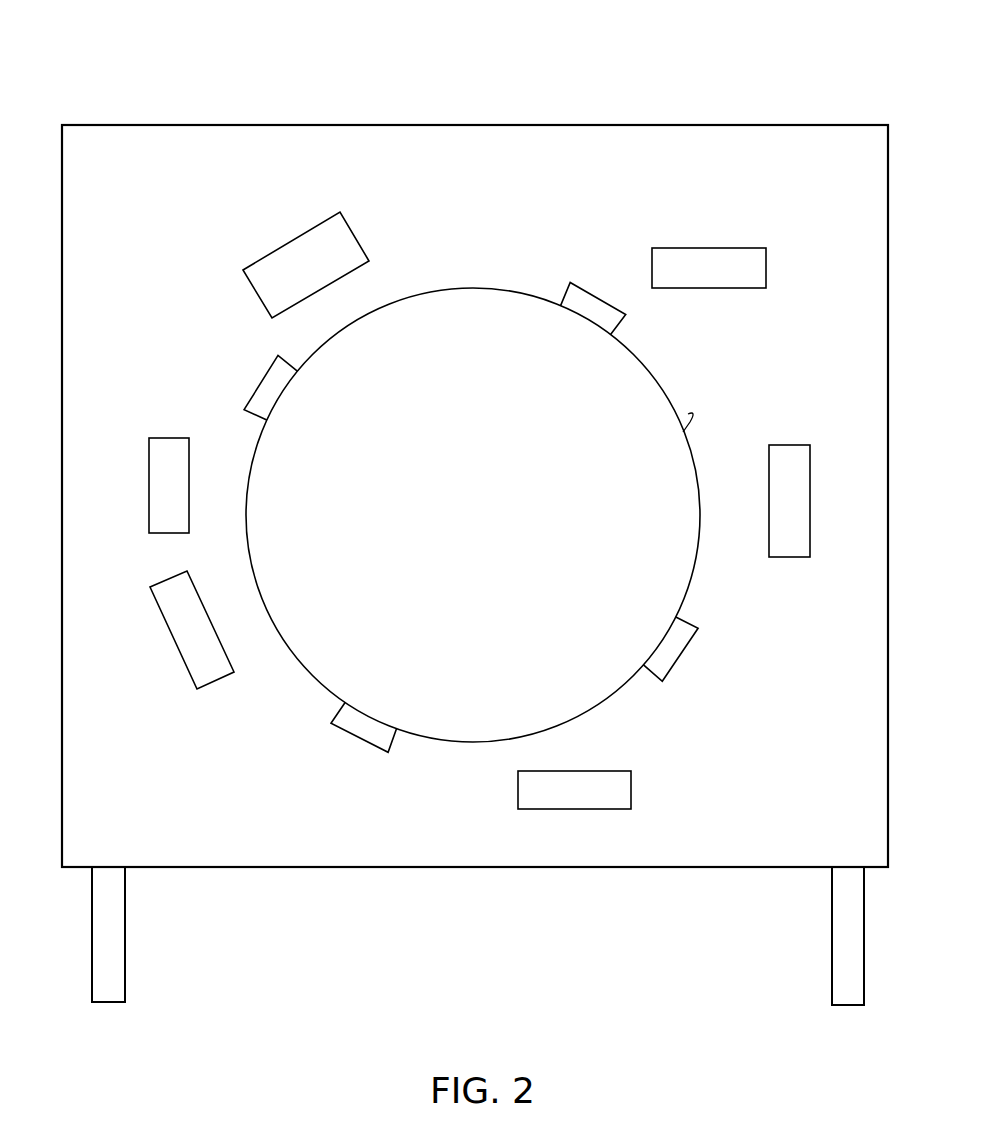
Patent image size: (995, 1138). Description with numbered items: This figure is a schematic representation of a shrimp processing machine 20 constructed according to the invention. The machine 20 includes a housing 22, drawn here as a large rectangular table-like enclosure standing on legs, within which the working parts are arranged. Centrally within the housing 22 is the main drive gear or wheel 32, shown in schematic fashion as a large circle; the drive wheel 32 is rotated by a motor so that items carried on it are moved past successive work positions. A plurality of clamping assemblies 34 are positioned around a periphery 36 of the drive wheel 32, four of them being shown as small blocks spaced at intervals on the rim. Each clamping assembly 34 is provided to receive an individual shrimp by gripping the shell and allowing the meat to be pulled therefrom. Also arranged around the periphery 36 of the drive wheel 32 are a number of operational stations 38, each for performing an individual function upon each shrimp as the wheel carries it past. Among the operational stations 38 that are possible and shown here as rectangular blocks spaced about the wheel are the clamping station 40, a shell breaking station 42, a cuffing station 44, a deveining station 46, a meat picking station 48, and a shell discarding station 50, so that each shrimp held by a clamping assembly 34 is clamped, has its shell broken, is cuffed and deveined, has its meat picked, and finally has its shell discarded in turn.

The machine 20 is at (428, 69).
The housing 22 is at (130, 125).
The main drive gear or wheel 32 is at (317, 621).
The clamping assemblies 34 is at (272, 389).
The periphery 36 is at (688, 414).
The operational stations 38 is at (806, 209).
The clamping station 40 is at (695, 260).
The shell breaking station 42 is at (342, 247).
The cuffing station 44 is at (158, 478).
The deveining station 46 is at (185, 593).
The meat picking station 48 is at (586, 787).
The shell discarding station 50 is at (797, 545).